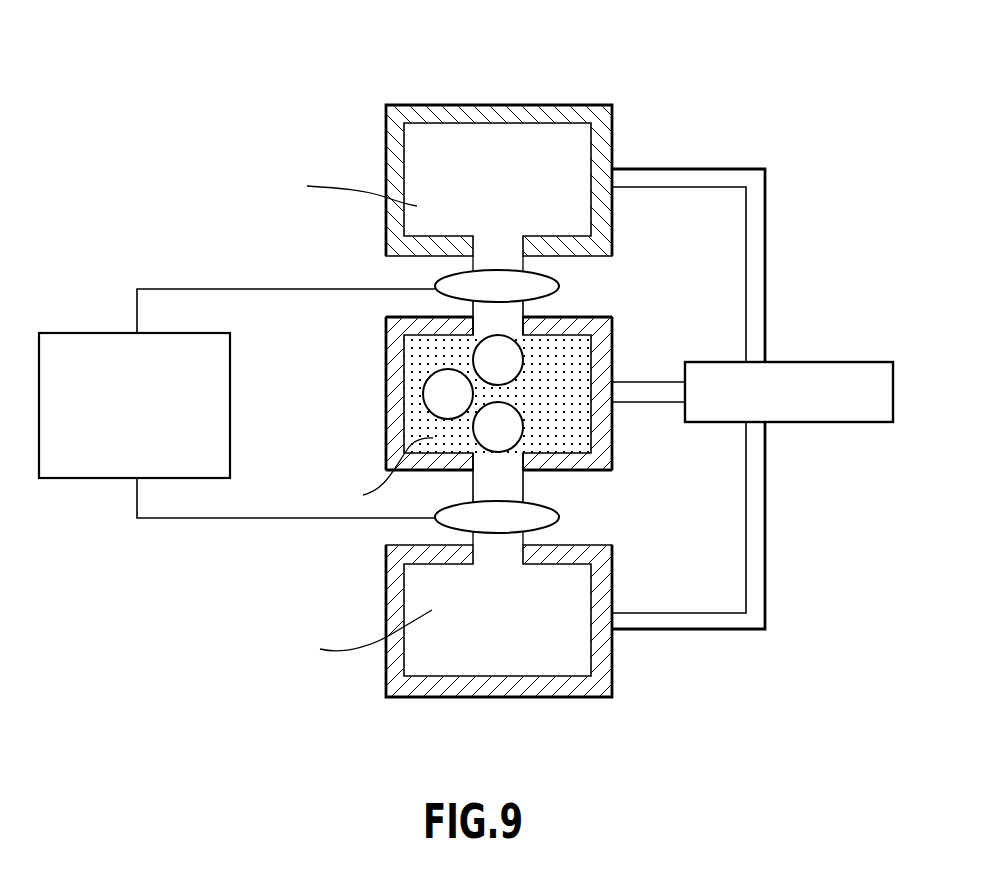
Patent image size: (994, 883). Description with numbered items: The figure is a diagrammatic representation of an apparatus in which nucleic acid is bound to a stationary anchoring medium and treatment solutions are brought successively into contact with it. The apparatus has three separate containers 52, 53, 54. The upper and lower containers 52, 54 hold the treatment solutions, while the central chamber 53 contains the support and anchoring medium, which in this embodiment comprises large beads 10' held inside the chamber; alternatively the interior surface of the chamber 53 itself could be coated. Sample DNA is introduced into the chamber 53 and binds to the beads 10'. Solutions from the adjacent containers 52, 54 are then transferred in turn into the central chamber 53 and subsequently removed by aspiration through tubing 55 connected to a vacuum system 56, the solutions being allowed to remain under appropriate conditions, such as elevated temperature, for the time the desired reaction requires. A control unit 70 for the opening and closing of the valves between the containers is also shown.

The container 52 is at (520, 104).
The central chamber 53 is at (613, 325).
The container 54 is at (614, 552).
The tubing 55 is at (767, 302).
The vacuum system 56 is at (852, 362).
The control for the opening and closing of the valves 70 is at (83, 340).
The large beads 10' is at (422, 393).